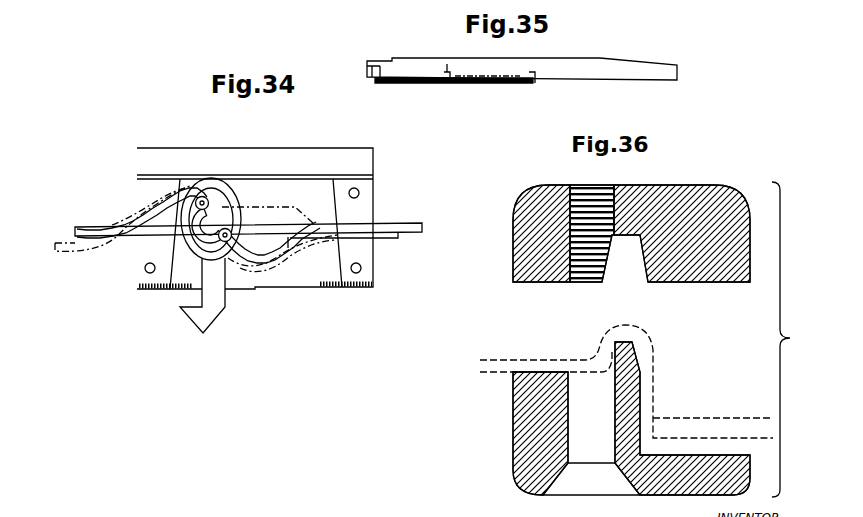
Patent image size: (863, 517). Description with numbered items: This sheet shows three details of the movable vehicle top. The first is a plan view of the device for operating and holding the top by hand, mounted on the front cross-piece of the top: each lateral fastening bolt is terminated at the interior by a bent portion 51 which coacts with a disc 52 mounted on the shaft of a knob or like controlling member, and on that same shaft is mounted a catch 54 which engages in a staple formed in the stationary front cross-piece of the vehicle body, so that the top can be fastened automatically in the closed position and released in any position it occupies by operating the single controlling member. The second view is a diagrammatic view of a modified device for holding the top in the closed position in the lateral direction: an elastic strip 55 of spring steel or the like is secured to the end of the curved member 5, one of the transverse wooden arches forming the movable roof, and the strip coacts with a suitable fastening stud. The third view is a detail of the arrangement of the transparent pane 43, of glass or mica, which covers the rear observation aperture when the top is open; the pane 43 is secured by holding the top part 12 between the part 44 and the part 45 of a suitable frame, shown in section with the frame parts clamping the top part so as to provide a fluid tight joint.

In FIG. 34, the bent portion 51 is at (198, 185).
In FIG. 34, the disc 52 is at (207, 233).
In FIG. 34, the catch 54 is at (210, 305).
In FIG. 35, the curved member 5 is at (465, 66).
In FIG. 35, the elastic strip 55 is at (408, 84).
In FIG. 36, the frame part 44 is at (719, 276).
In FIG. 36, the top part 12 is at (645, 348).
In FIG. 36, the transparent pane 43 is at (688, 418).
In FIG. 36, the frame part 45 is at (683, 492).